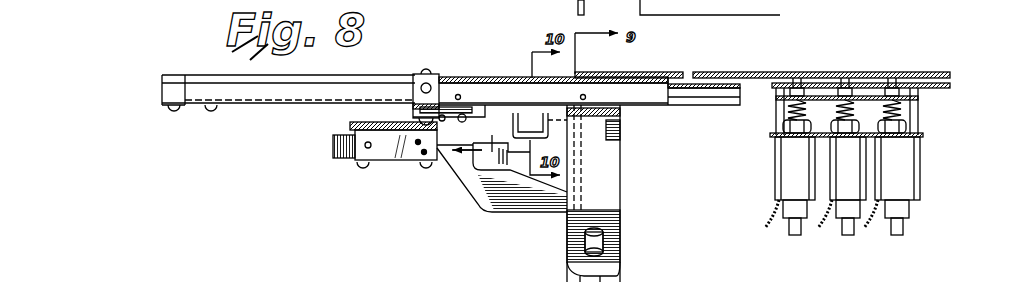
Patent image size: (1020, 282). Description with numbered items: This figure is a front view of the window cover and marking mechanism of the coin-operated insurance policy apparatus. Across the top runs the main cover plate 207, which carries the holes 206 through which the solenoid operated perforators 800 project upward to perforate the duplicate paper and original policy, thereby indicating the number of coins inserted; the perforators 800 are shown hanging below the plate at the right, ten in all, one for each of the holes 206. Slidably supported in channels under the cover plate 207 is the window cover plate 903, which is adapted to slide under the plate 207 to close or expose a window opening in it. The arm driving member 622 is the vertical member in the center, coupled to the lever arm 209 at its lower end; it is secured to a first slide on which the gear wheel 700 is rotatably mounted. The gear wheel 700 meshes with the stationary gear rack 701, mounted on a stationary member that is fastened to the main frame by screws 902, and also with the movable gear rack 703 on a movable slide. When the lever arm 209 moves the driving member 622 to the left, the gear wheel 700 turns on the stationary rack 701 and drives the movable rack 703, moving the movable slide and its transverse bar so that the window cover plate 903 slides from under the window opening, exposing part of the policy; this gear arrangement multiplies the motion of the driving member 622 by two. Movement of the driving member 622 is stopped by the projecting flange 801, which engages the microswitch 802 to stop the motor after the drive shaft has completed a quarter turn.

The screws 902 is at (456, 94).
The gear wheel 700 is at (553, 56).
The window cover plate 903 is at (526, 77).
The stationary gear rack 701 is at (503, 92).
The movable gear rack 703 is at (578, 73).
The holes 206 is at (892, 76).
The cover plate 207 is at (918, 77).
The arm driving member 622 is at (617, 193).
The arm 209 is at (619, 273).
The solenoid operated perforators 800 is at (832, 170).
The projecting flange 801 is at (508, 171).
The microswitch 802 is at (335, 158).